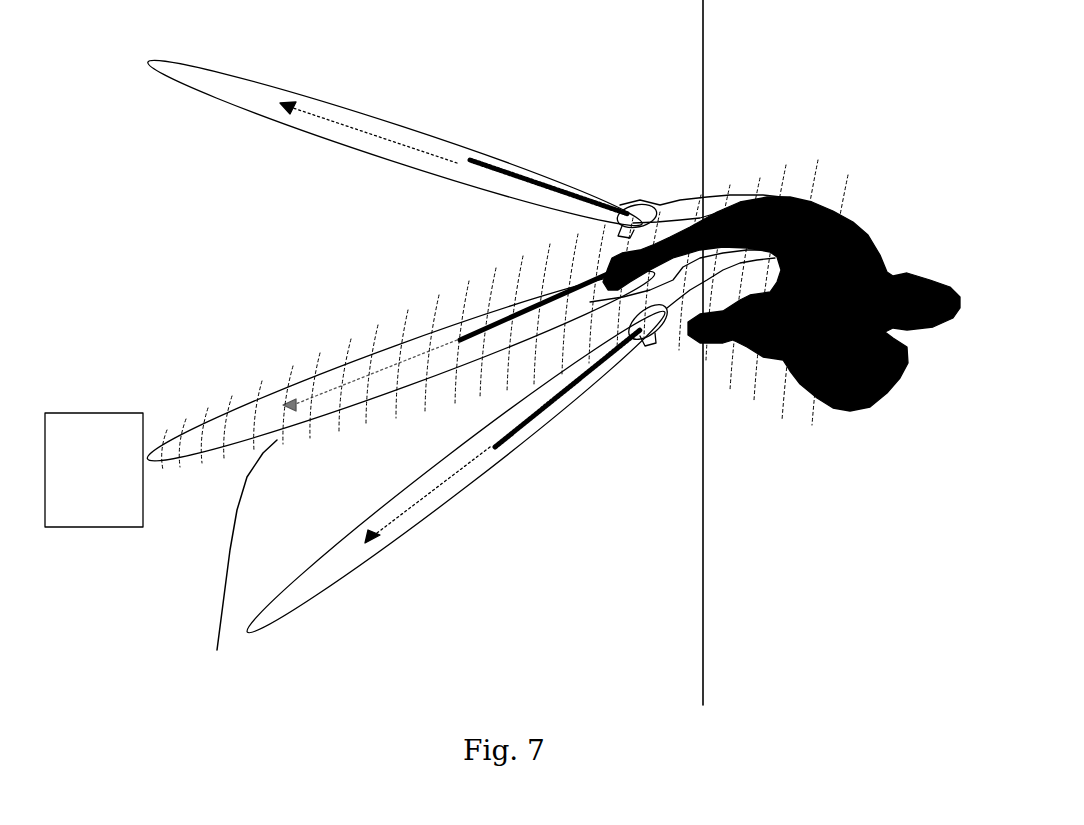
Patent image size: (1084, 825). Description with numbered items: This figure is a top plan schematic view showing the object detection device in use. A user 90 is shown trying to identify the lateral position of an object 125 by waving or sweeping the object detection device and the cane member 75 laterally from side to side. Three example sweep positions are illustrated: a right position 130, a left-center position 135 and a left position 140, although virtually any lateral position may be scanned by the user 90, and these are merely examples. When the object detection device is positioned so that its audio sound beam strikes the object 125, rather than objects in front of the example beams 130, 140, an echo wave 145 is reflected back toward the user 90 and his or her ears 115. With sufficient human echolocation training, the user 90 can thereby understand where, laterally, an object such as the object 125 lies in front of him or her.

The right position 130 is at (363, 110).
The left-center position 135 is at (285, 385).
The left position 140 is at (337, 590).
The cane member 75 is at (478, 312).
The user 90 is at (900, 238).
The ears 115 is at (833, 210).
The object 125 is at (120, 527).
The echo wave 145 is at (235, 563).